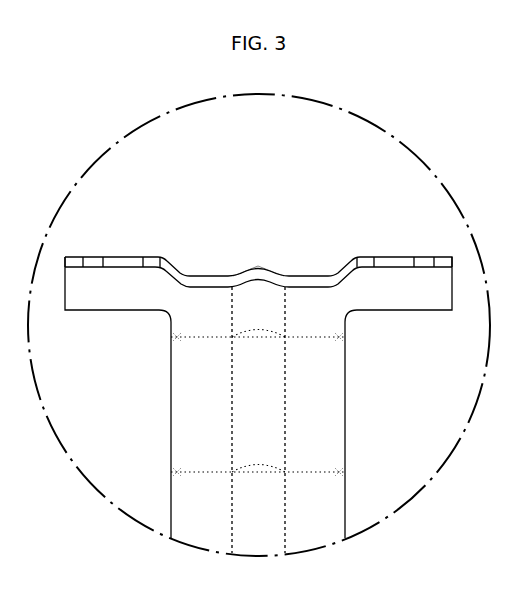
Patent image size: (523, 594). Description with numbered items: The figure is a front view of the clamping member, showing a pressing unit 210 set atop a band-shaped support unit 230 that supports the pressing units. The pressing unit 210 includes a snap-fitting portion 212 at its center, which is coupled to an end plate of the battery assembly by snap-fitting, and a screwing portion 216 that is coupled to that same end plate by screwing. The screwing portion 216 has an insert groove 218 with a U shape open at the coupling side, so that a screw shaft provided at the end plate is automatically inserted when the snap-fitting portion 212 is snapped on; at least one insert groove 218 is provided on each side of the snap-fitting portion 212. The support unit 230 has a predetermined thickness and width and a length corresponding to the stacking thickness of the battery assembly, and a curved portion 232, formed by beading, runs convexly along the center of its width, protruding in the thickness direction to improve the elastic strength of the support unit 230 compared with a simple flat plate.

The pressing unit 210 is at (66, 269).
The snap-fitting portion 212 is at (212, 275).
The screwing portion 216 is at (95, 257).
The insert groove 218 is at (133, 247).
The support unit 230 is at (186, 377).
The curved portion 232 is at (252, 409).